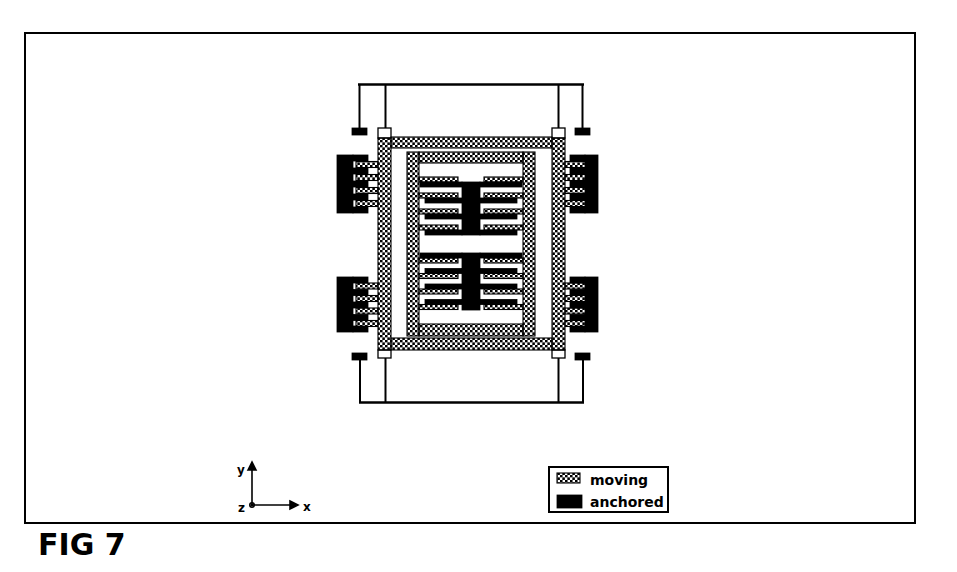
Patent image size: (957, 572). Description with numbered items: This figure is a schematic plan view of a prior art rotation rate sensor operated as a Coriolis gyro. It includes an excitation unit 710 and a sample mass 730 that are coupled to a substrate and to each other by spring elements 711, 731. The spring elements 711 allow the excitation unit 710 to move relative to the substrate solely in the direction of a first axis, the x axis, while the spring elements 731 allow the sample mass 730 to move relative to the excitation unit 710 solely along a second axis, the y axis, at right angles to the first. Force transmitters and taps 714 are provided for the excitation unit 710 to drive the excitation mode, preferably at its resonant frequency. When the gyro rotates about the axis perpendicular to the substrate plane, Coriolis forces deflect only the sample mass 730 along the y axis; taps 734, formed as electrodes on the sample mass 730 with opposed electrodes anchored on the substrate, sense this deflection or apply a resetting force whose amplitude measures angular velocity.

The excitation unit 710 is at (360, 127).
The spring elements 711 is at (383, 382).
The sample mass 730 is at (421, 141).
The spring elements 731 is at (412, 337).
The taps 734 is at (420, 184).
The force transmitters and taps 714 is at (336, 293).